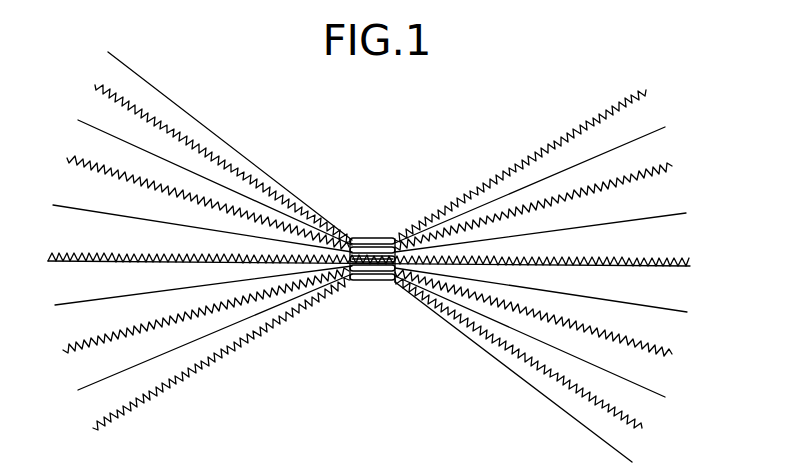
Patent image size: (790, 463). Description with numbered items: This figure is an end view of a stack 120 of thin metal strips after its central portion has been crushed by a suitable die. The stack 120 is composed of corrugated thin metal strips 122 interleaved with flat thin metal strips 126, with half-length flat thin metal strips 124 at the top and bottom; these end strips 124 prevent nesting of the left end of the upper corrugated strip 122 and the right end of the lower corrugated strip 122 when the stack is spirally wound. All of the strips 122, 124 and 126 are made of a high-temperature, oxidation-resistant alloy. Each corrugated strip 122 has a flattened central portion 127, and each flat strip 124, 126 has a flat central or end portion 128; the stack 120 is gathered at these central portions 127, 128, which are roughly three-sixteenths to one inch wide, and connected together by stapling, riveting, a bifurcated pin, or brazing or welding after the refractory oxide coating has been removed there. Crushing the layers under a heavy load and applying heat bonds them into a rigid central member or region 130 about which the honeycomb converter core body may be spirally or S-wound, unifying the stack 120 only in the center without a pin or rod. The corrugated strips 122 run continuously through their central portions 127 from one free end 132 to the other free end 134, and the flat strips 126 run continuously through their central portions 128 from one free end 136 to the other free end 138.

The stack of thin metal strips 120 is at (451, 98).
The corrugated thin metal strips 122 is at (215, 156).
The flat thin metal strips 124 is at (154, 86).
The flat thin metal strips 126 is at (100, 128).
The flattened central portion 127 is at (375, 238).
The flat central portion or flat end portion 128 is at (352, 283).
The rigid central member or region 130 is at (374, 289).
The free end 132 is at (96, 85).
The free end 134 is at (650, 92).
The free end 136 is at (80, 390).
The free end 138 is at (630, 384).